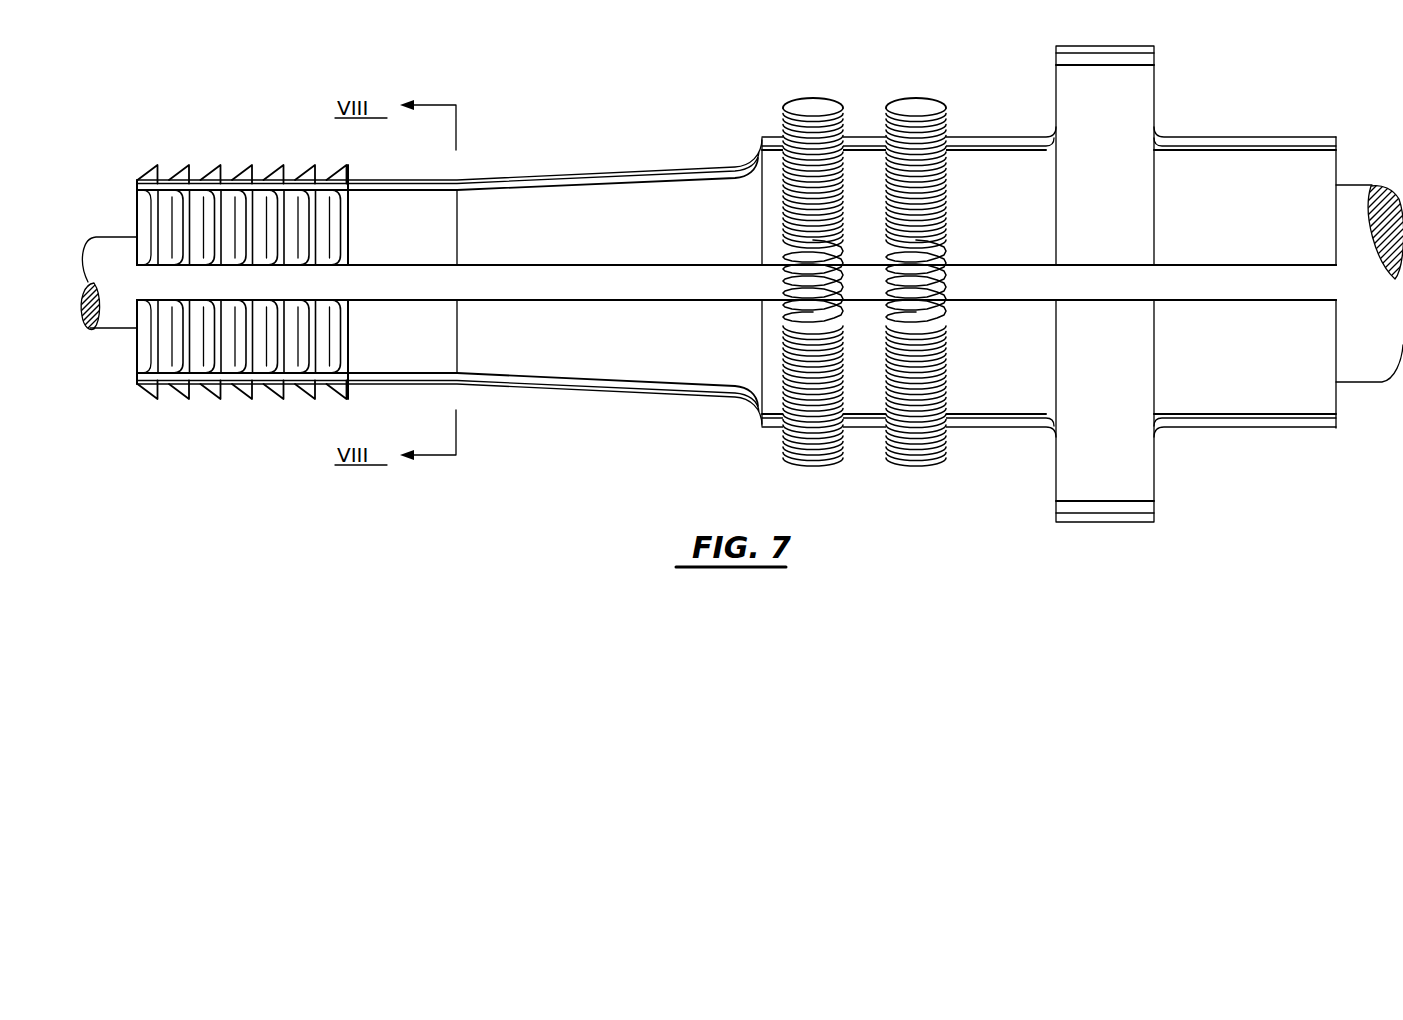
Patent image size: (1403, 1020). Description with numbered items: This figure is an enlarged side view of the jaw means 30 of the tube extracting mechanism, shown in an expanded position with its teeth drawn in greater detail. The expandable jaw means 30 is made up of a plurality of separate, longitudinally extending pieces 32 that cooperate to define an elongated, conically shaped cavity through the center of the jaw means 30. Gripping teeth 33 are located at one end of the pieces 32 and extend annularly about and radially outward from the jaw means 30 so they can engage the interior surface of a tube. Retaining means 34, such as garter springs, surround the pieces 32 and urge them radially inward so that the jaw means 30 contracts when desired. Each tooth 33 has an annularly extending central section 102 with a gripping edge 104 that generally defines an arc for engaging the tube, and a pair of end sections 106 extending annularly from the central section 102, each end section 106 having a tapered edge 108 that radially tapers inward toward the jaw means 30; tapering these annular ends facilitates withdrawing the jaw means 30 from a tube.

The jaw means 30 is at (597, 138).
The pieces 32 is at (648, 337).
The gripping teeth 33 is at (189, 172).
The retaining means 34 is at (898, 97).
The central section 102 is at (152, 333).
The gripping edge 104 is at (157, 345).
The end sections 106 is at (143, 257).
The tapered edge 108 is at (150, 257).